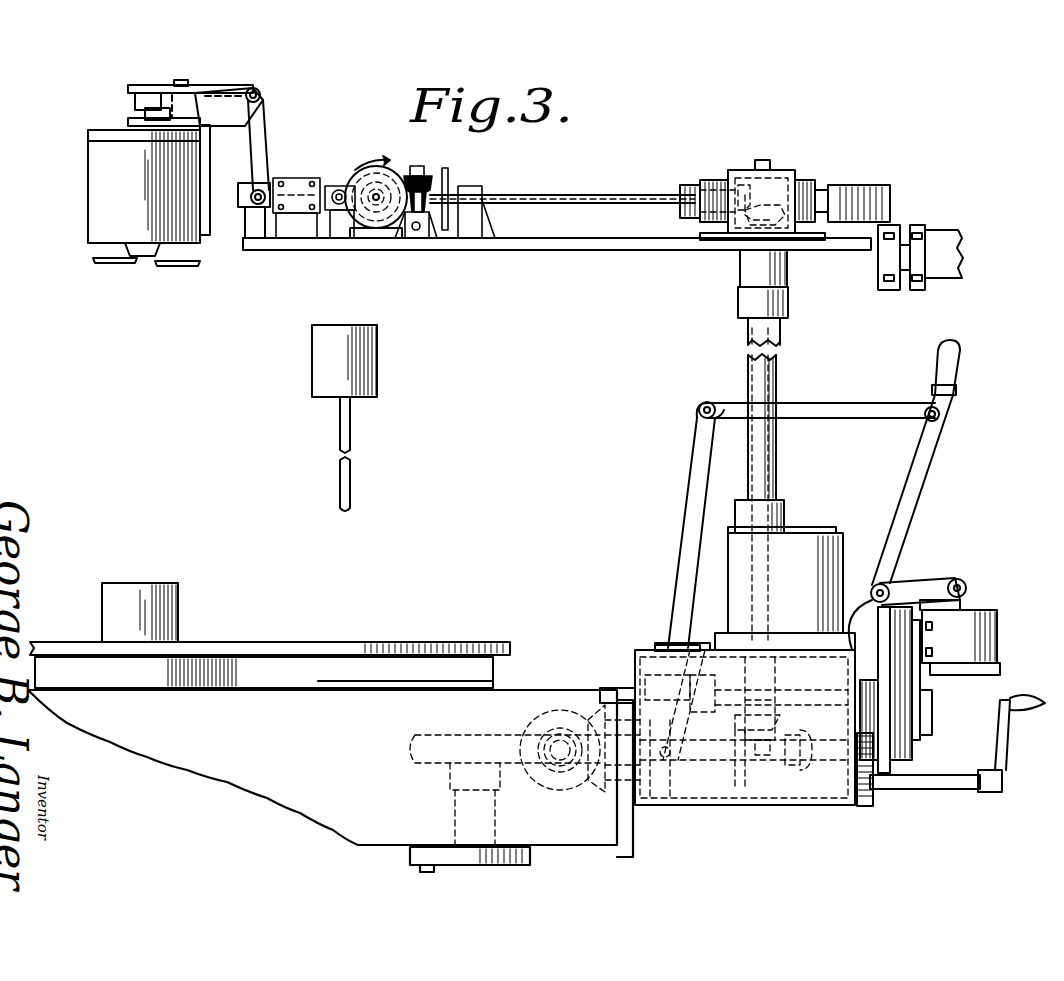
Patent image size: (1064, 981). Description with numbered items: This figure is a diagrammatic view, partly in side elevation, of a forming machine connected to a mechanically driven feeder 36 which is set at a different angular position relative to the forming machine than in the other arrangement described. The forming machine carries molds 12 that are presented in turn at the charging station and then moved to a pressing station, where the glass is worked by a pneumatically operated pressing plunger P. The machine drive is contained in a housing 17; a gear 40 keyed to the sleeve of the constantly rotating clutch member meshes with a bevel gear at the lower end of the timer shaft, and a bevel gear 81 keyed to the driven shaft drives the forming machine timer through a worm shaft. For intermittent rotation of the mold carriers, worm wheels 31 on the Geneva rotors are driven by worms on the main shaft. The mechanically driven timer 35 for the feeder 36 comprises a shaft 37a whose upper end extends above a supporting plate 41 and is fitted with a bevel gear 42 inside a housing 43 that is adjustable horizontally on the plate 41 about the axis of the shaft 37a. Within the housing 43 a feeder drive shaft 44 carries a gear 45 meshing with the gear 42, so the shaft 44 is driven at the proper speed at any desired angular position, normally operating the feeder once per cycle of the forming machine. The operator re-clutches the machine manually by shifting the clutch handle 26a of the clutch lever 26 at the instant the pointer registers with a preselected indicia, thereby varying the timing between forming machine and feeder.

The mold 12 is at (165, 622).
The housing 17 is at (636, 650).
The lever 26 is at (905, 515).
The clutch handle 26a is at (948, 365).
The worm wheel 31 is at (470, 746).
The mechanically driven timer 35 is at (780, 486).
The mechanically driven feeder 36 is at (90, 178).
The shaft 37a is at (762, 375).
The gear 40 is at (742, 780).
The supporting plate 41 is at (855, 255).
The bevel gear 42 is at (752, 222).
The housing 43 is at (790, 175).
The feeder drive shaft 44 is at (565, 200).
The gear 45 is at (746, 182).
The bevel gear 81 is at (805, 770).
The pressing plunger P is at (360, 370).